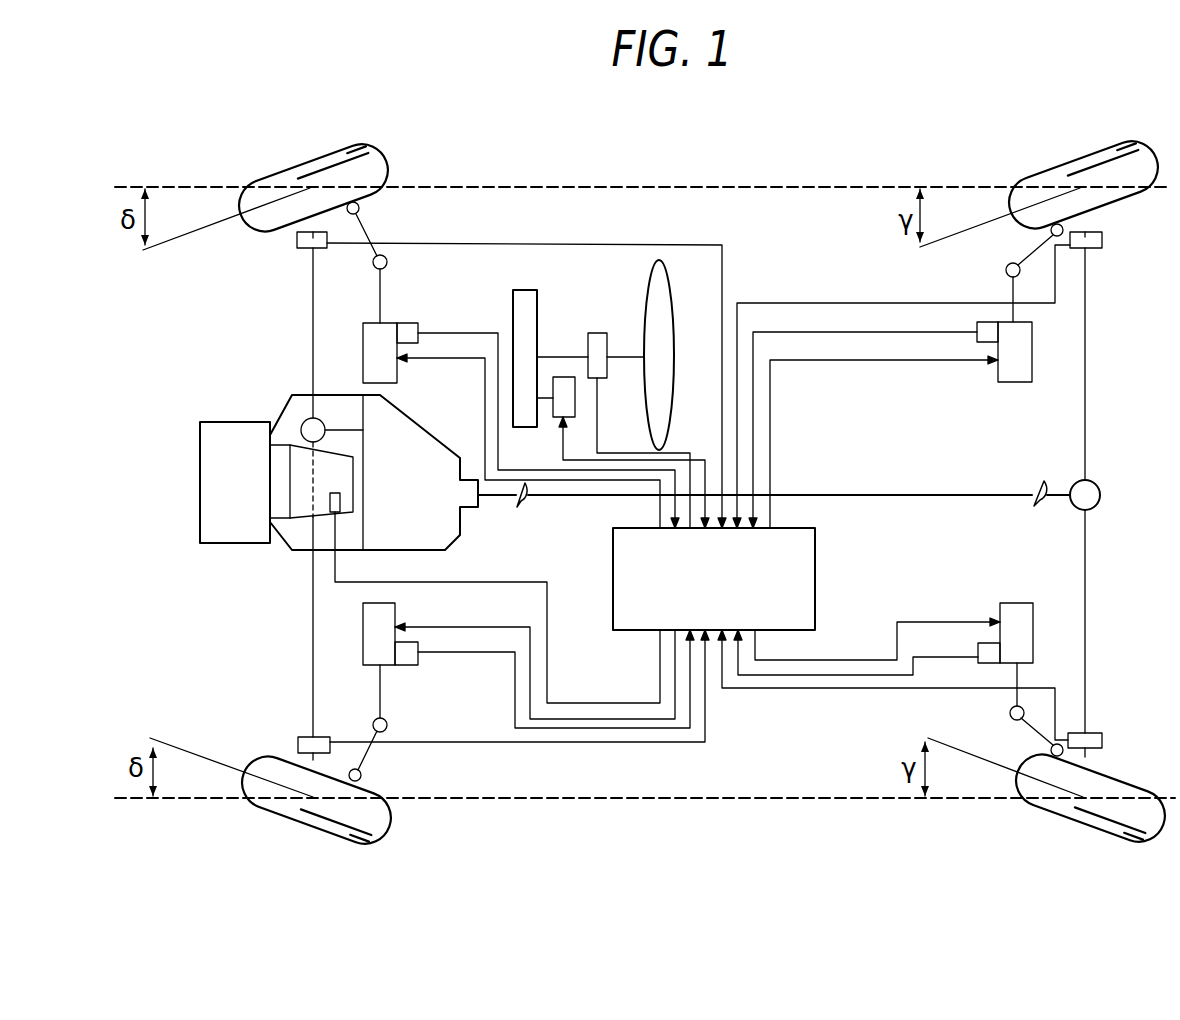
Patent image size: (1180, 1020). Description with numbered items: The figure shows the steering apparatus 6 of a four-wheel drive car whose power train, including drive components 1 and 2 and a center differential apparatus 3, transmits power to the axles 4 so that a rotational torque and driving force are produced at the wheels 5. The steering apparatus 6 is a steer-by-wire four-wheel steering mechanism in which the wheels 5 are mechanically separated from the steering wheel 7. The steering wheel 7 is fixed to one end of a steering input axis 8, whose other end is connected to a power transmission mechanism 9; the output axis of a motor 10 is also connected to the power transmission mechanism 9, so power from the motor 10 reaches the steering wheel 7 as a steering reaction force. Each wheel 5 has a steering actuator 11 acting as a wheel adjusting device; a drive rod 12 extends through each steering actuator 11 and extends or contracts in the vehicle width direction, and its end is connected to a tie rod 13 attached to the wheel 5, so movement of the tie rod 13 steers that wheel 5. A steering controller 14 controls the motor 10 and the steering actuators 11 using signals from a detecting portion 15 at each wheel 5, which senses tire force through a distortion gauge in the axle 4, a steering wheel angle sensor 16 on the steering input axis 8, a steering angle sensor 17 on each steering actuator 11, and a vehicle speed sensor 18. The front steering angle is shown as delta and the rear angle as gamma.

The motor 1 is at (200, 490).
The gear housing 2 is at (305, 463).
The center differential apparatus 3 is at (462, 518).
The axle 4 is at (313, 363).
The wheel 5 is at (257, 175).
The steering apparatus 6 is at (744, 272).
The steering wheel 7 is at (645, 358).
The steering input axis 8 is at (552, 350).
The power transmission mechanism 9 is at (512, 323).
The motor 10 is at (565, 377).
The steering actuator 11 is at (363, 347).
The drive rod 12 is at (380, 300).
The tie rod 13 is at (373, 237).
The steering controller 14 is at (816, 587).
The detecting portion 15 is at (297, 241).
The steering wheel angle sensor 16 is at (600, 333).
The steering angle sensor 17 is at (415, 323).
The vehicle speed sensor 18 is at (332, 513).